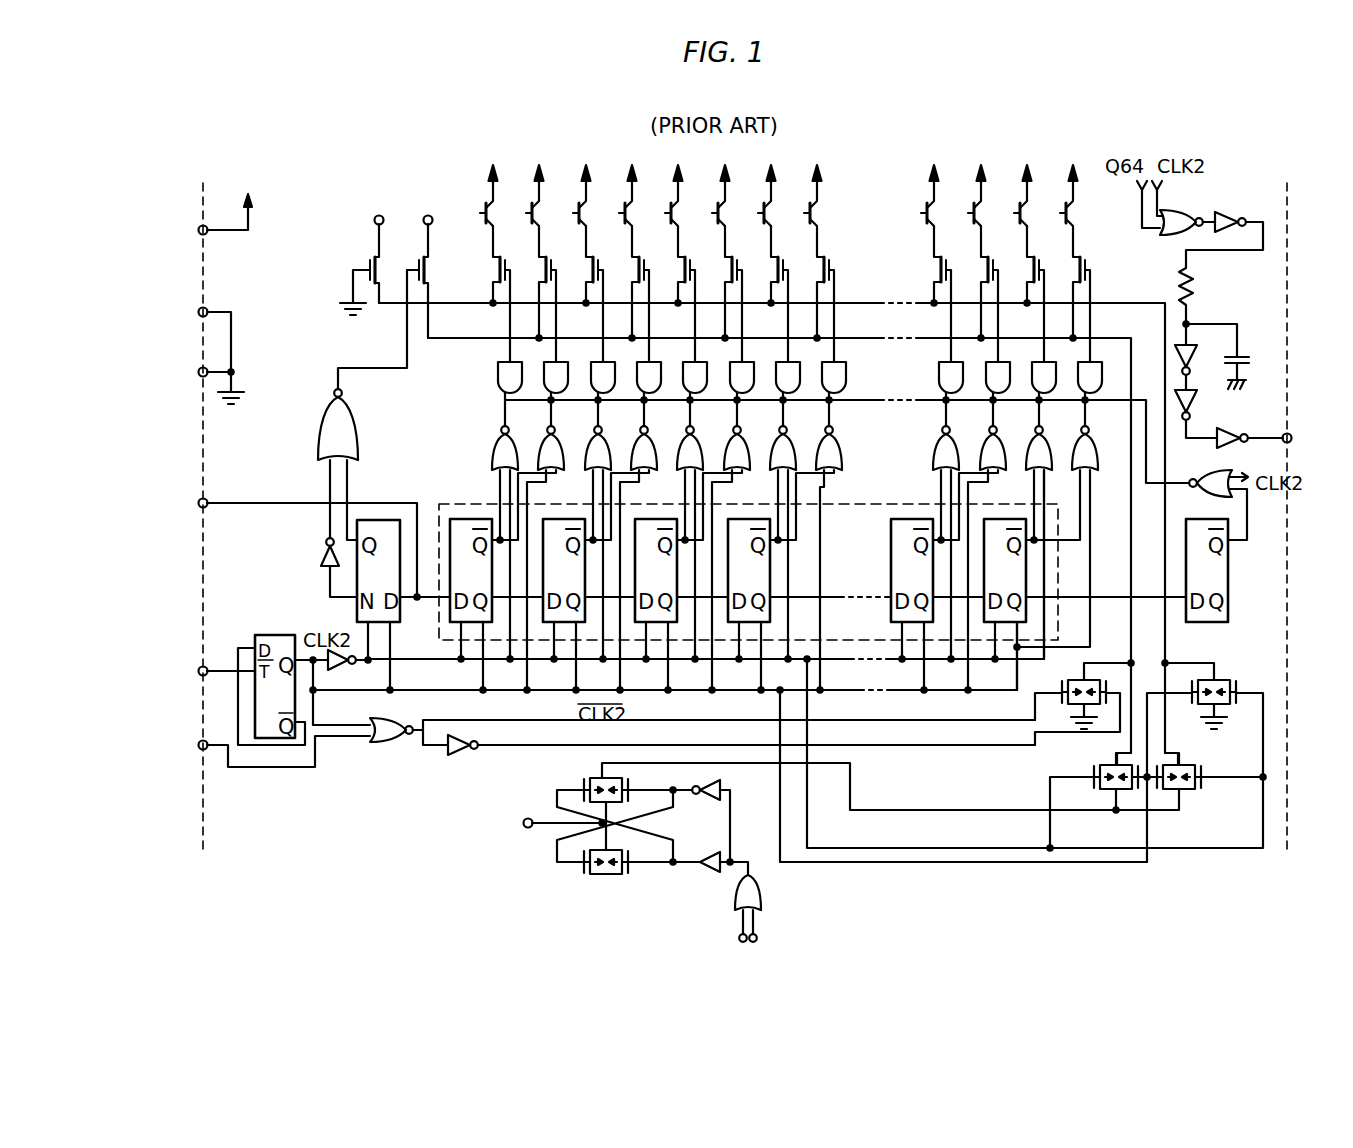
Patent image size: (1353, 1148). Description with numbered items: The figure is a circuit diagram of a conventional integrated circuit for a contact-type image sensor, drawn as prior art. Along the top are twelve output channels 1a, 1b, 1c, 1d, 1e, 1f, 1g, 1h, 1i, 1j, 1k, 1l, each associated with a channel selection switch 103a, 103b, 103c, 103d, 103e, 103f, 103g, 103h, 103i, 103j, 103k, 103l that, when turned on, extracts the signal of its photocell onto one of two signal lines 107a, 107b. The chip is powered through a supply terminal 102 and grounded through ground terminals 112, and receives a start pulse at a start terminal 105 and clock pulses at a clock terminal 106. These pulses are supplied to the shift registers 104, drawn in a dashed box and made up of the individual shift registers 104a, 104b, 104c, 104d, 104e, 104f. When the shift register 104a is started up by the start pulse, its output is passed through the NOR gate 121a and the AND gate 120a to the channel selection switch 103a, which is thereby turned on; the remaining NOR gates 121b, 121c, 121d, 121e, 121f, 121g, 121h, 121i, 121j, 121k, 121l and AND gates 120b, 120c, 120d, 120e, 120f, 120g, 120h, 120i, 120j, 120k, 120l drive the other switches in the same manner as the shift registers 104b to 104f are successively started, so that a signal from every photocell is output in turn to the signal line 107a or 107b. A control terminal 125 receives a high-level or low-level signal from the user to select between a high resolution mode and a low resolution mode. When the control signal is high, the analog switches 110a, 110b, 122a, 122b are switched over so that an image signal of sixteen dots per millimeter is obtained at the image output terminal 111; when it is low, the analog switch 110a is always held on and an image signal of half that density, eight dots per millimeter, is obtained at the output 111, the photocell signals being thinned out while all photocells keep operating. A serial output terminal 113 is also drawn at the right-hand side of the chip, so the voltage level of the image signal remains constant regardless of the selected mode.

The output terminal 1a is at (502, 211).
The output terminal 1b is at (548, 211).
The output terminal 1c is at (595, 211).
The output terminal 1d is at (641, 211).
The output terminal 1e is at (687, 211).
The output terminal 1f is at (734, 211).
The output terminal 1g is at (780, 211).
The output terminal 1h is at (826, 211).
The output terminal 1i is at (943, 211).
The output terminal 1j is at (990, 211).
The output terminal 1k is at (1036, 211).
The output terminal 1l is at (1082, 211).
The power supply terminal VDD 102 is at (198, 224).
The ground terminal 112 is at (198, 309).
The serial input terminal SI 105 is at (198, 503).
The clock input terminal CLK 106 is at (198, 671).
The control terminal 125 is at (198, 741).
The channel selection switch 103a is at (497, 269).
The output transistor 103b is at (543, 269).
The output transistor 103c is at (590, 269).
The output transistor 103d is at (636, 269).
The output transistor 103e is at (682, 269).
The output transistor 103f is at (729, 269).
The output transistor 103g is at (775, 269).
The output transistor 103h is at (821, 269).
The output transistor 103i is at (938, 269).
The output transistor 103j is at (985, 269).
The output transistor 103k is at (1031, 269).
The output transistor 103l is at (1077, 269).
The signal line 107a is at (844, 303).
The signal line 107b is at (860, 339).
The AND gate 120a is at (493, 373).
The AND gate 120b is at (539, 373).
The AND gate 120c is at (586, 373).
The AND gate 120d is at (632, 373).
The AND gate 120e is at (678, 373).
The AND gate 120f is at (725, 373).
The AND gate 120g is at (771, 373).
The AND gate 120h is at (817, 373).
The AND gate 120i is at (934, 373).
The AND gate 120j is at (981, 373).
The AND gate 120k is at (1027, 373).
The AND gate 120l is at (1073, 373).
The NOR gate 121a is at (487, 441).
The NOR gate 121b is at (533, 441).
The NOR gate 121c is at (580, 441).
The NOR gate 121d is at (626, 441).
The NOR gate 121e is at (672, 441).
The NOR gate 121f is at (719, 441).
The NOR gate 121g is at (765, 441).
The NOR gate 121h is at (811, 441).
The NOR gate 121i is at (928, 441).
The NOR gate 121j is at (975, 441).
The NOR gate 121k is at (1021, 441).
The NOR gate 121l is at (1067, 441).
The shift registers 104 is at (442, 505).
The shift register 104a is at (464, 519).
The shift register 104b is at (557, 519).
The shift register 104c is at (649, 519).
The shift register 104d is at (742, 519).
The shift register 104e is at (905, 519).
The shift register 104f is at (998, 519).
The analog switch 110a is at (1068, 720).
The analog switch 110b is at (1232, 710).
The analog switch 122a is at (1107, 802).
The analog switch 122b is at (1190, 800).
The image output terminal 111 is at (645, 865).
The serial output terminal SO 113 is at (1288, 435).